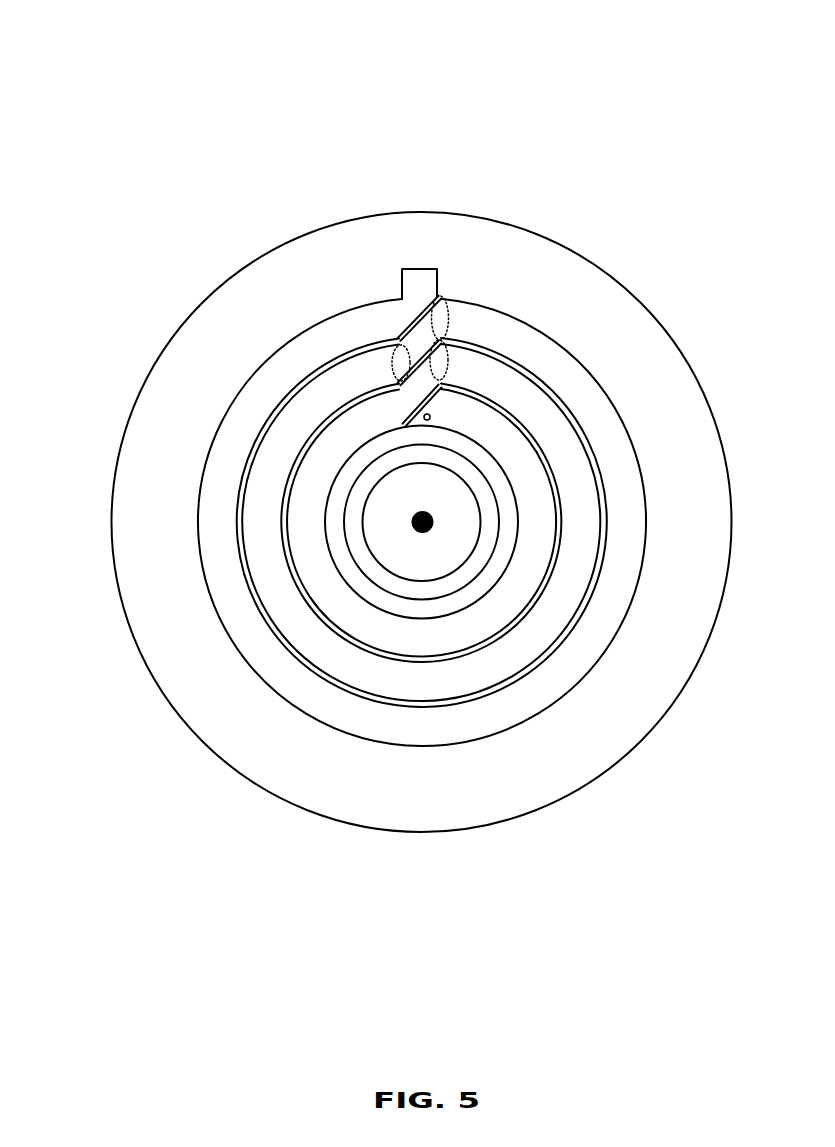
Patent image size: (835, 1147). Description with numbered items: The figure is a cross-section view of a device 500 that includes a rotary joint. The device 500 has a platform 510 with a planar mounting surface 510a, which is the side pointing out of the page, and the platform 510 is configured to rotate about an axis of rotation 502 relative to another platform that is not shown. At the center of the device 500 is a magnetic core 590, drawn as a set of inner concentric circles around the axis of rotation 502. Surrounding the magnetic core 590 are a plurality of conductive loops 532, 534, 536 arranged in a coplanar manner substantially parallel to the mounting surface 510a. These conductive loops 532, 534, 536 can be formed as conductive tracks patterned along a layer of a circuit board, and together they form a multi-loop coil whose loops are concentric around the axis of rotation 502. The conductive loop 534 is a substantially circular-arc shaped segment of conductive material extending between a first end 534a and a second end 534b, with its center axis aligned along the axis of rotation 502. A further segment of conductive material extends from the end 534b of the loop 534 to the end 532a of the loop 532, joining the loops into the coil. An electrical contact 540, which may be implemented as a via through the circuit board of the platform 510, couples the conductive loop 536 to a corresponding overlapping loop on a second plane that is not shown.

The device 500 is at (79, 89).
The axis of rotation 502 is at (417, 516).
The platform 510 is at (108, 526).
The planar mounting surface 510a is at (443, 815).
The conductive loop 532 is at (435, 738).
The end of conductive loop 532 532a is at (451, 311).
The conductive loop 534 is at (435, 695).
The end of conductive loop 534 534a is at (391, 362).
The end of conductive loop 534 534b is at (452, 358).
The conductive loop 536 is at (435, 652).
The electrical contact 540 is at (431, 415).
The magnetic core 590 is at (439, 566).